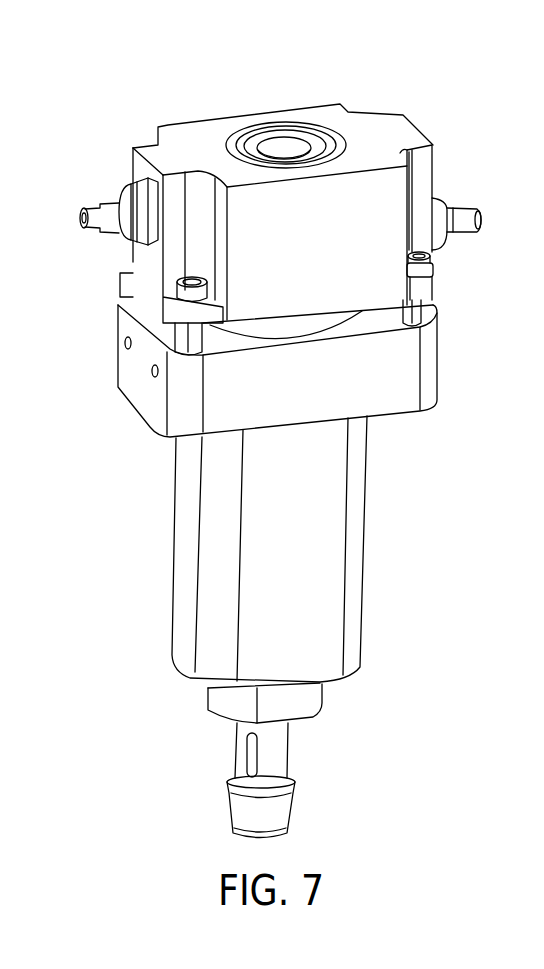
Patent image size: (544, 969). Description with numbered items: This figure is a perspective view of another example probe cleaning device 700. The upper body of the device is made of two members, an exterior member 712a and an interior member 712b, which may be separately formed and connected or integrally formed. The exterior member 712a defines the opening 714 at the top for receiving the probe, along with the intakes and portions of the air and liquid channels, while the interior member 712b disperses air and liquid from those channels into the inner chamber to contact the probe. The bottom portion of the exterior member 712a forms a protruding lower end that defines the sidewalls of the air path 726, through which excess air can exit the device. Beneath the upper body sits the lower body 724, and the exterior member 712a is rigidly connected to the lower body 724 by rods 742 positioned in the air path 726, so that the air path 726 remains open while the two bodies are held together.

The probe cleaning device 700 is at (102, 112).
The exterior member 712a is at (410, 127).
The interior member 712b is at (340, 140).
The opening 714 is at (280, 142).
The lower body 724 is at (337, 590).
The air path 726 is at (373, 327).
The rods 742 is at (130, 293).